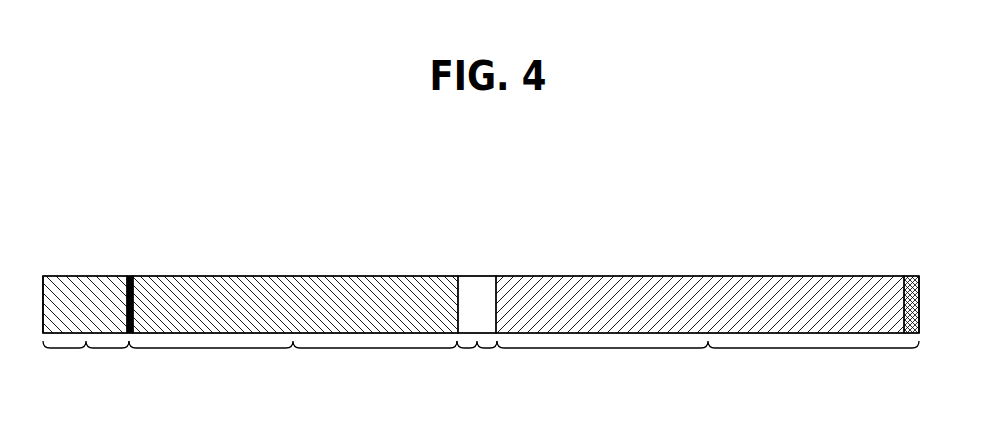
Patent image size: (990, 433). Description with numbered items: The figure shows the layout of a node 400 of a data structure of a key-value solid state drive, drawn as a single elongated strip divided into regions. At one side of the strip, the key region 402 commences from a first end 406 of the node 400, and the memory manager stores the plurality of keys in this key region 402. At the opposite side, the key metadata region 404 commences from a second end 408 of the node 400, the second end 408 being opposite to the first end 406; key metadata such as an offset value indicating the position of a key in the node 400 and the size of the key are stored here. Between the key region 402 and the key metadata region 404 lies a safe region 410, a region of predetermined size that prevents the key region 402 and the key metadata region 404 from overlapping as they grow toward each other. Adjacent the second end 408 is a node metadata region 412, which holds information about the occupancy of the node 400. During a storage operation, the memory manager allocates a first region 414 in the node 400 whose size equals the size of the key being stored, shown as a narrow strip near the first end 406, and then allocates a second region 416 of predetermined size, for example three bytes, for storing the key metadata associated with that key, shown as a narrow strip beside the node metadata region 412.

The node 400 is at (472, 194).
The key region 402 is at (707, 328).
The key metadata region 404 is at (293, 328).
The first end 406 is at (920, 262).
The second end 408 is at (49, 262).
The safe region 410 is at (477, 328).
The node metadata region 412 is at (86, 328).
The first region 414 is at (909, 276).
The second region 416 is at (130, 276).